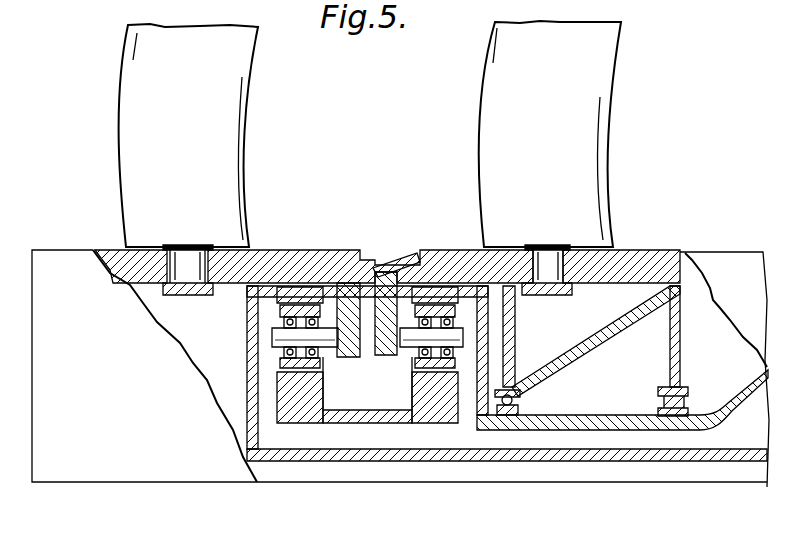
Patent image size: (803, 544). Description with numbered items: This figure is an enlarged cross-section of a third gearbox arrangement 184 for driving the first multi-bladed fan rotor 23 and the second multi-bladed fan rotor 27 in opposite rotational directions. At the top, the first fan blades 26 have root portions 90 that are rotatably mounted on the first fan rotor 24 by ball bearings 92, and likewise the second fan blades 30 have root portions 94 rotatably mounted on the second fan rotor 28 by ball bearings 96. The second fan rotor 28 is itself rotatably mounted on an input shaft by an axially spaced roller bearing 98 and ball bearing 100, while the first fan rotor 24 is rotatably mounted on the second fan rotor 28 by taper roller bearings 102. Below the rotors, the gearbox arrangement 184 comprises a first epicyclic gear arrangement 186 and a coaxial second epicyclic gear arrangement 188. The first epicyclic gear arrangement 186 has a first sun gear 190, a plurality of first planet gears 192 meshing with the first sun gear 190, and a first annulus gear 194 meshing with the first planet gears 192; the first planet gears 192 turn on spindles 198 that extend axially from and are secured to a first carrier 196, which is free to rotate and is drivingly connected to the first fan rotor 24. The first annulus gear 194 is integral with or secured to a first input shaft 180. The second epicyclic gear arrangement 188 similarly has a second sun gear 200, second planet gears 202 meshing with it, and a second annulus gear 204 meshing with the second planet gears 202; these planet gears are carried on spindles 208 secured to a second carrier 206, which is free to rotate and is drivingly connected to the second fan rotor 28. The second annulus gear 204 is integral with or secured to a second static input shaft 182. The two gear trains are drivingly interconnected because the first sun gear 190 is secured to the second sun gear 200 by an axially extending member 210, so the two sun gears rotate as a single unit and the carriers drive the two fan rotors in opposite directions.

The first multi-bladed fan rotor 23 is at (113, 131).
The first fan blades 26 is at (133, 67).
The second multi-bladed fan rotor 27 is at (473, 134).
The second fan blades 30 is at (500, 78).
The first fan rotor 24 is at (127, 258).
The second fan rotor 28 is at (485, 252).
The root portions 90 is at (185, 286).
The ball bearings 92 is at (165, 290).
The root portions 94 is at (588, 250).
The ball bearings 96 is at (600, 285).
The third gearbox arrangement 184 is at (202, 382).
The first input shaft 180 is at (737, 462).
The second static input shaft 182 is at (692, 430).
The spindles 208 is at (470, 327).
The ball bearing 100 is at (520, 398).
The roller bearing 98 is at (685, 392).
The first carrier 196 is at (350, 290).
The second carrier 206 is at (418, 262).
The taper roller bearings 102 is at (395, 268).
The first sun gear 190 is at (290, 400).
The axially extending member 210 is at (372, 415).
The second epicyclic gear arrangement 188 is at (406, 391).
The first epicyclic gear arrangement 186 is at (331, 391).
The first annulus gear 194 is at (295, 302).
The first planet gears 192 is at (316, 305).
The spindles 198 is at (280, 334).
The second annulus gear 204 is at (455, 250).
The second planet gears 202 is at (434, 262).
The second sun gear 200 is at (443, 400).